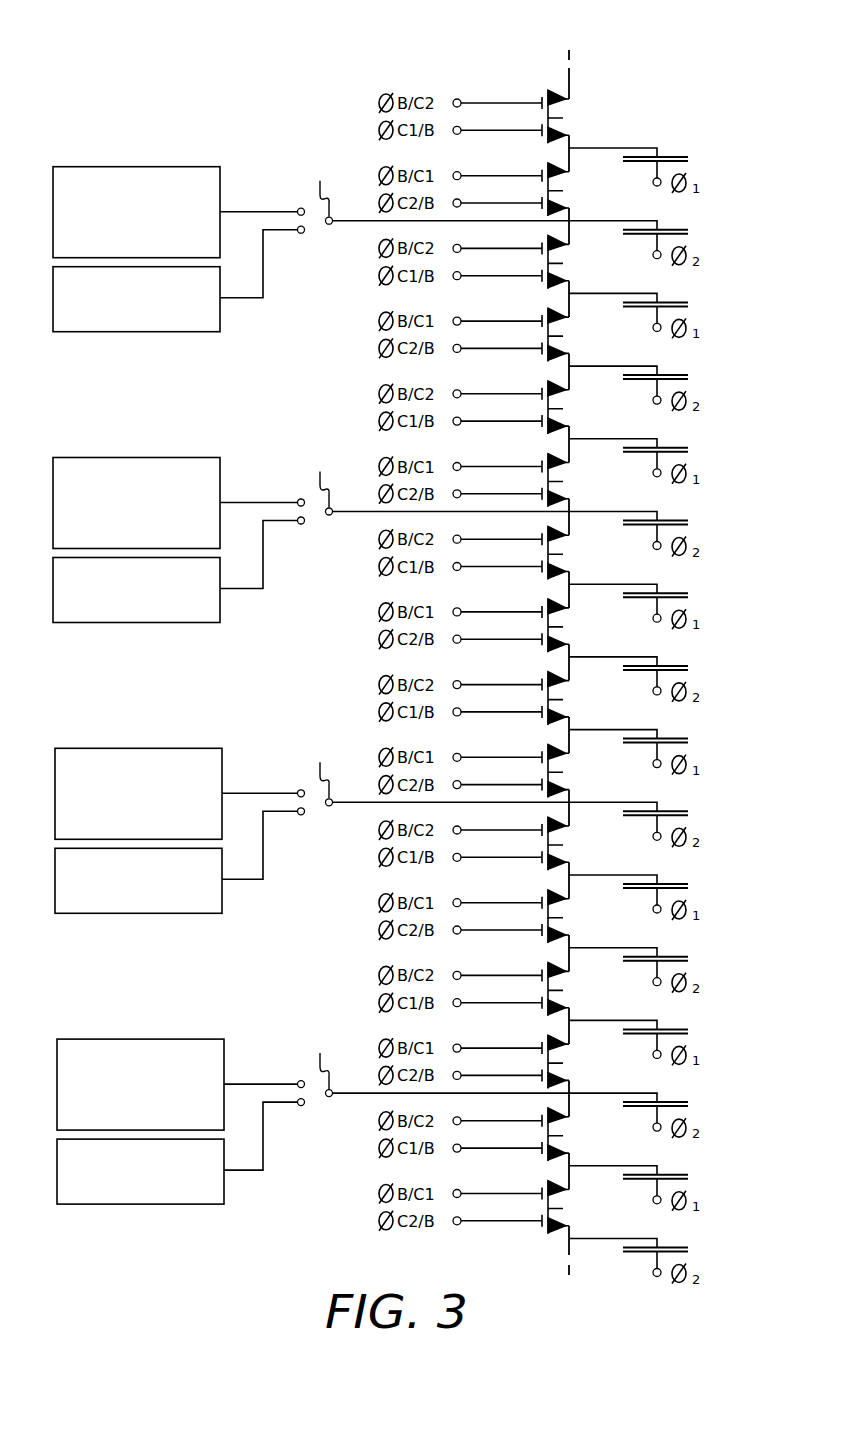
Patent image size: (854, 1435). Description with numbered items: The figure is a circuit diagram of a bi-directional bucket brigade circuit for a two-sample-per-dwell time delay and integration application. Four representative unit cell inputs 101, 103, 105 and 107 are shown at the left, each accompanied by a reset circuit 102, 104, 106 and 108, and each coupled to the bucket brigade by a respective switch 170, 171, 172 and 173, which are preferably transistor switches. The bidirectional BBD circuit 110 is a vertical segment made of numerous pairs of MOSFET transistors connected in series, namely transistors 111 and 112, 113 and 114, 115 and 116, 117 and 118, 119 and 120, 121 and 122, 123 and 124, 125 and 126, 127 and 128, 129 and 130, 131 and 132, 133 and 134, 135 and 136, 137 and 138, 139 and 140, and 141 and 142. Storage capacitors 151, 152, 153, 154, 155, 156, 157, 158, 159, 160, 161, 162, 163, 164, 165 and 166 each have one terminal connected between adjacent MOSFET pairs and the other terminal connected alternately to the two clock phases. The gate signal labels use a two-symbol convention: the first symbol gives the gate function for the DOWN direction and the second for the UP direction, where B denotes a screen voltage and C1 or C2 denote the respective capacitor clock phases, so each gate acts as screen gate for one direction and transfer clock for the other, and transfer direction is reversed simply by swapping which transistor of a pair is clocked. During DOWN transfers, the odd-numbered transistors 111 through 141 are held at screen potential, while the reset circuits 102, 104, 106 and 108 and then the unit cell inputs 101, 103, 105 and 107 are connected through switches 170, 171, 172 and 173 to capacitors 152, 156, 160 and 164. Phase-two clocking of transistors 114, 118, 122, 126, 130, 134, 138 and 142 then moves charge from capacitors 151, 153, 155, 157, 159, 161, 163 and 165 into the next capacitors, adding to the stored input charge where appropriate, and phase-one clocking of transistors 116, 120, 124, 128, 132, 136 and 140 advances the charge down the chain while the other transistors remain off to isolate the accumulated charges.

The unit cell input 101 is at (155, 251).
The reset circuit 102 is at (155, 325).
The unit cell input 103 is at (155, 542).
The reset circuit 104 is at (155, 616).
The unit cell input 105 is at (157, 833).
The reset circuit 106 is at (157, 907).
The unit cell input 107 is at (159, 1123).
The reset circuit 108 is at (159, 1197).
The bidirectional BBD circuit 110 is at (521, 58).
The MOS transistor 111 is at (511, 98).
The MOS transistor 112 is at (511, 124).
The MOS transistor 113 is at (511, 171).
The MOS transistor 114 is at (511, 197).
The MOS transistor 115 is at (511, 243).
The MOS transistor 116 is at (511, 270).
The MOS transistor 117 is at (511, 316).
The MOS transistor 118 is at (511, 342).
The MOS transistor 119 is at (511, 389).
The MOS transistor 120 is at (511, 415).
The MOS transistor 121 is at (511, 462).
The MOS transistor 122 is at (511, 488).
The MOS transistor 123 is at (511, 534).
The MOS transistor 124 is at (511, 561).
The MOS transistor 125 is at (511, 607).
The MOS transistor 126 is at (511, 633).
The MOS transistor 127 is at (511, 680).
The MOS transistor 128 is at (511, 706).
The MOS transistor 129 is at (511, 752).
The MOS transistor 130 is at (511, 779).
The MOS transistor 131 is at (511, 825).
The MOS transistor 132 is at (511, 851).
The MOS transistor 133 is at (511, 898).
The MOS transistor 134 is at (511, 924).
The MOS transistor 135 is at (511, 970).
The MOS transistor 136 is at (511, 997).
The MOS transistor 137 is at (511, 1043).
The MOS transistor 138 is at (511, 1069).
The MOS transistor 139 is at (511, 1116).
The MOS transistor 140 is at (511, 1142).
The MOS transistor 141 is at (511, 1189).
The MOS transistor 142 is at (511, 1215).
The storage capacitor 151 is at (646, 161).
The storage capacitor 152 is at (646, 234).
The storage capacitor 153 is at (646, 306).
The storage capacitor 154 is at (646, 379).
The storage capacitor 155 is at (646, 452).
The storage capacitor 156 is at (646, 525).
The storage capacitor 157 is at (646, 597).
The storage capacitor 158 is at (646, 670).
The storage capacitor 159 is at (646, 743).
The storage capacitor 160 is at (646, 815).
The storage capacitor 161 is at (646, 888).
The storage capacitor 162 is at (646, 961).
The storage capacitor 163 is at (646, 1033).
The storage capacitor 164 is at (646, 1106).
The storage capacitor 165 is at (646, 1179).
The storage capacitor 166 is at (646, 1252).
The switch 170 is at (434, 194).
The switch 171 is at (434, 485).
The switch 172 is at (434, 776).
The switch 173 is at (434, 1066).